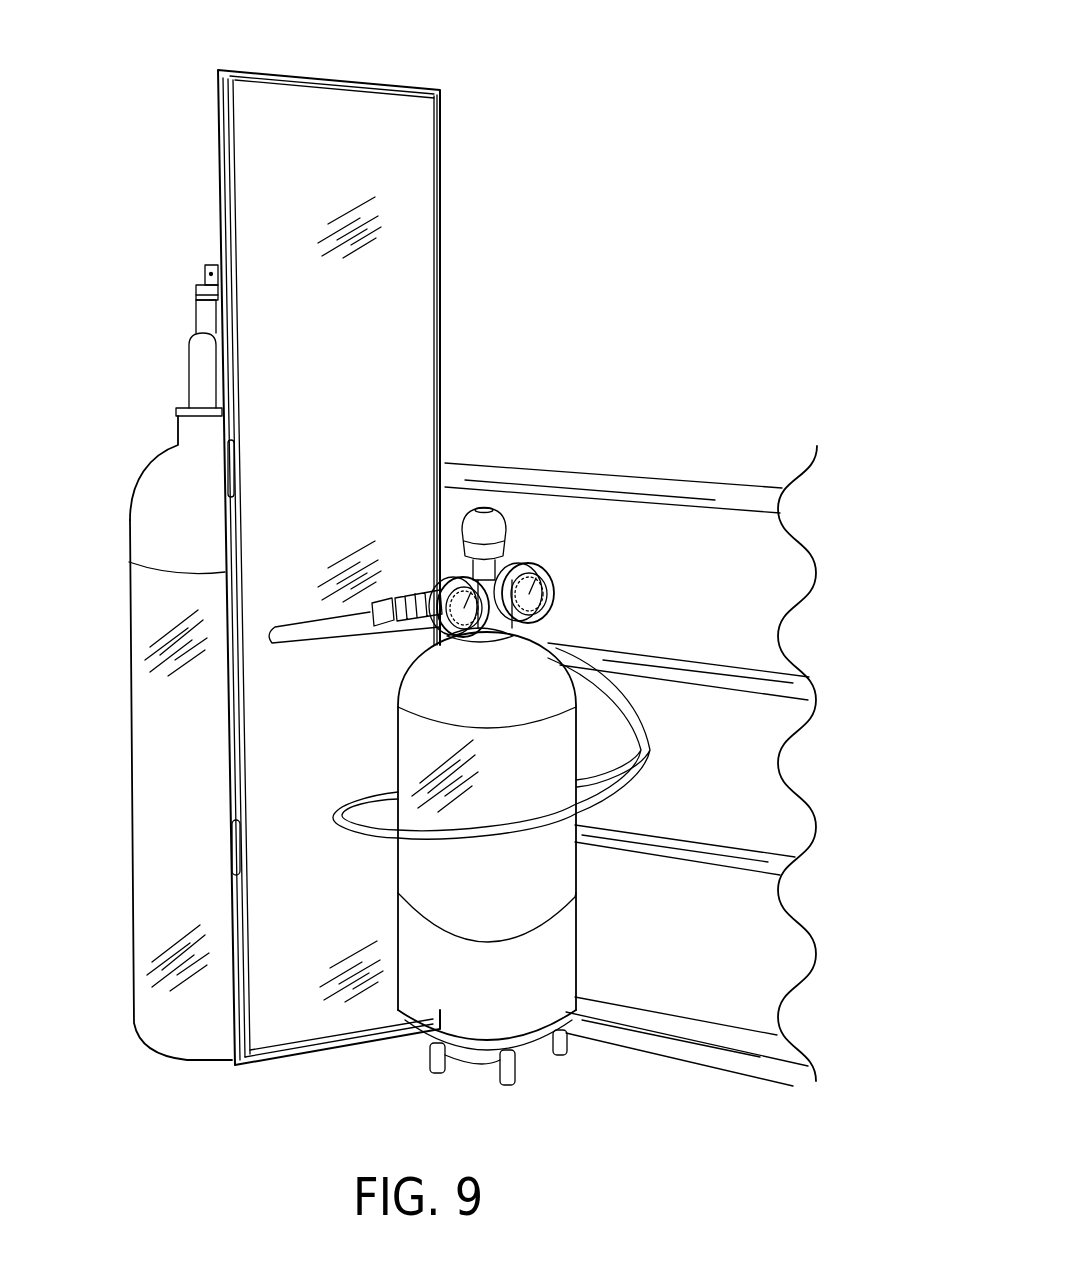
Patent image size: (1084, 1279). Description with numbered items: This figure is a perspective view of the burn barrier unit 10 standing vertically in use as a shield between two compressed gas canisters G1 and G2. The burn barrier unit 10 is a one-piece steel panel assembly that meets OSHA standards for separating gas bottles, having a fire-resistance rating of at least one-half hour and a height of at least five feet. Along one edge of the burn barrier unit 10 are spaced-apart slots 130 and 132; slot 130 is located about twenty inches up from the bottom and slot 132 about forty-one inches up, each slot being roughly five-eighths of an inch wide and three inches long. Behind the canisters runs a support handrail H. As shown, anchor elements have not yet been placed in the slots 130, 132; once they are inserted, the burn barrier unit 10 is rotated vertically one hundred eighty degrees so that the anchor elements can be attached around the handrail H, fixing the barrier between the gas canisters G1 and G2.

The burn barrier unit 10 is at (337, 69).
The slot 130 is at (233, 847).
The slot 132 is at (225, 482).
The support handrail H is at (567, 480).
The compressed gas canister G1 is at (540, 1057).
The compressed gas canister G2 is at (165, 1064).